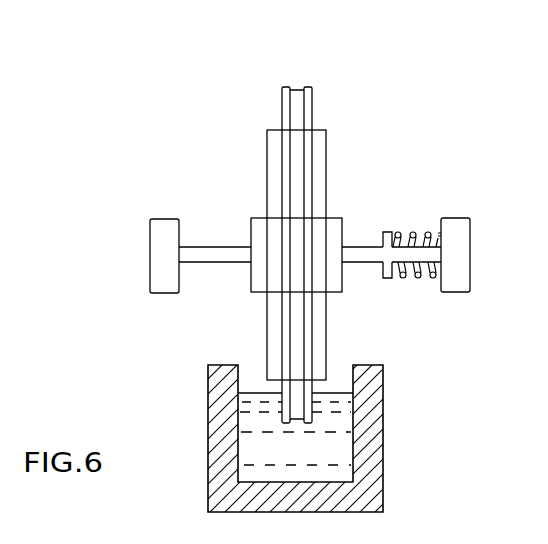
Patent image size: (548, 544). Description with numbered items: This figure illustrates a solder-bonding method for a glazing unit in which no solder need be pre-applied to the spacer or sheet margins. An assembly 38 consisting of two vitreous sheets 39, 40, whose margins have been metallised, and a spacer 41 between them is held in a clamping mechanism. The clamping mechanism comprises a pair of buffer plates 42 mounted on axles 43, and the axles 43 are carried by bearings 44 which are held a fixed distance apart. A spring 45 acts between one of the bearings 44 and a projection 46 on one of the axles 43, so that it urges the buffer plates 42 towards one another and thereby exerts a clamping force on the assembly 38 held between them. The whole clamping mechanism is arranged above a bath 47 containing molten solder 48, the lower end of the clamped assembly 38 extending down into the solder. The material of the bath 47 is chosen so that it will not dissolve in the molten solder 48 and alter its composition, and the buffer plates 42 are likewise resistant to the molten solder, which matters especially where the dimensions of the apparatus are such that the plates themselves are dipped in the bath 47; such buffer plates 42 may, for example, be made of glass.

The assembly 38 is at (300, 226).
The vitreous sheet 39 is at (283, 92).
The vitreous sheet 40 is at (312, 92).
The spacer 41 is at (297, 110).
The buffer plates 42 is at (272, 163).
The axles 43 is at (223, 254).
The bearings 44 is at (160, 257).
The spring 45 is at (418, 277).
The projection 46 is at (388, 270).
The bath 47 is at (213, 432).
The molten solder 48 is at (343, 452).